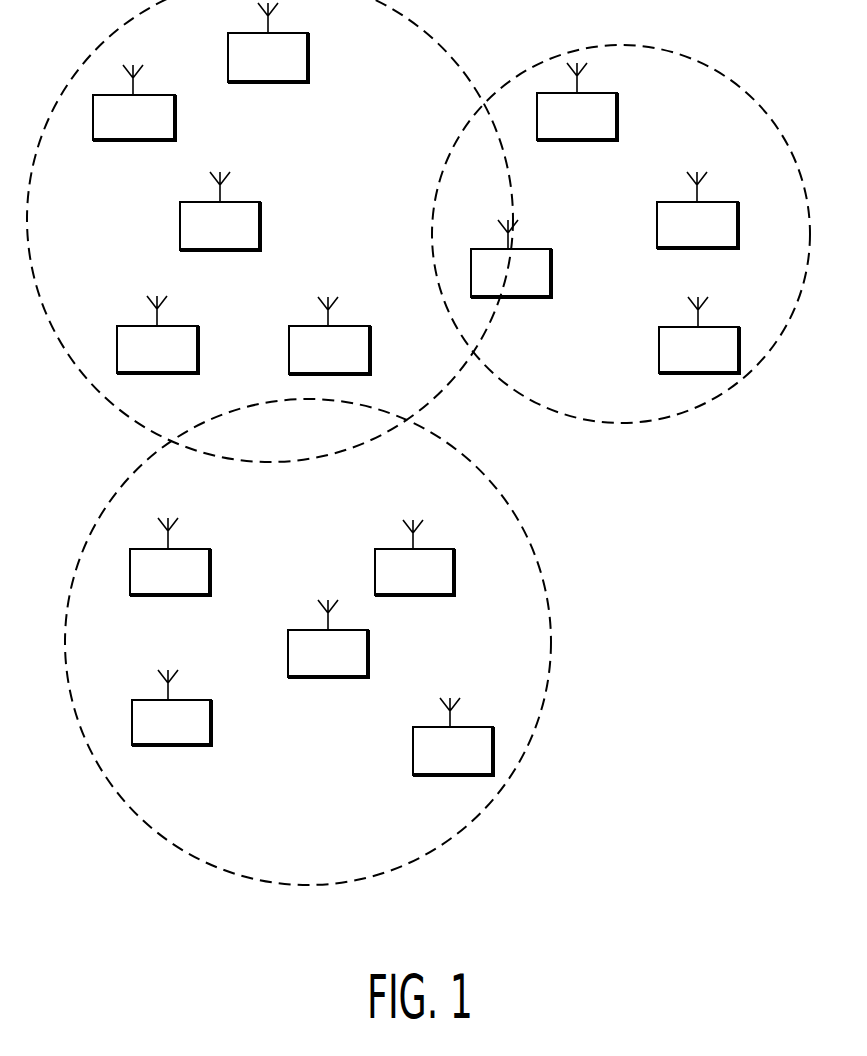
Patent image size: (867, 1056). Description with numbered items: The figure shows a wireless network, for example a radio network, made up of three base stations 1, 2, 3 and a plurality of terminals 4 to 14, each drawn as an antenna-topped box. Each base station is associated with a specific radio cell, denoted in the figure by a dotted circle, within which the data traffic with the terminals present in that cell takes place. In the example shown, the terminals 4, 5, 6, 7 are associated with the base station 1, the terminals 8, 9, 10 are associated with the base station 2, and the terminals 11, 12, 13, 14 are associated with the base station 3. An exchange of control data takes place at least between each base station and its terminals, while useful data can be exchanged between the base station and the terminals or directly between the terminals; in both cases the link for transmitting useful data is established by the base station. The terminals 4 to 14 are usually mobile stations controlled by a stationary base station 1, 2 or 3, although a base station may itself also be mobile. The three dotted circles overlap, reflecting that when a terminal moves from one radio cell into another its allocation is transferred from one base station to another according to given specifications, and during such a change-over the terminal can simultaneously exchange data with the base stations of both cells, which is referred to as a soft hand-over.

The base station 1 is at (250, 220).
The base station 2 is at (668, 225).
The base station 3 is at (355, 652).
The terminal 4 is at (153, 100).
The terminal 5 is at (268, 70).
The terminal 6 is at (177, 335).
The terminal 7 is at (300, 335).
The terminal 8 is at (605, 115).
The terminal 9 is at (672, 337).
The terminal 10 is at (483, 262).
The terminal 11 is at (188, 560).
The terminal 12 is at (434, 558).
The terminal 13 is at (197, 723).
The terminal 14 is at (420, 758).